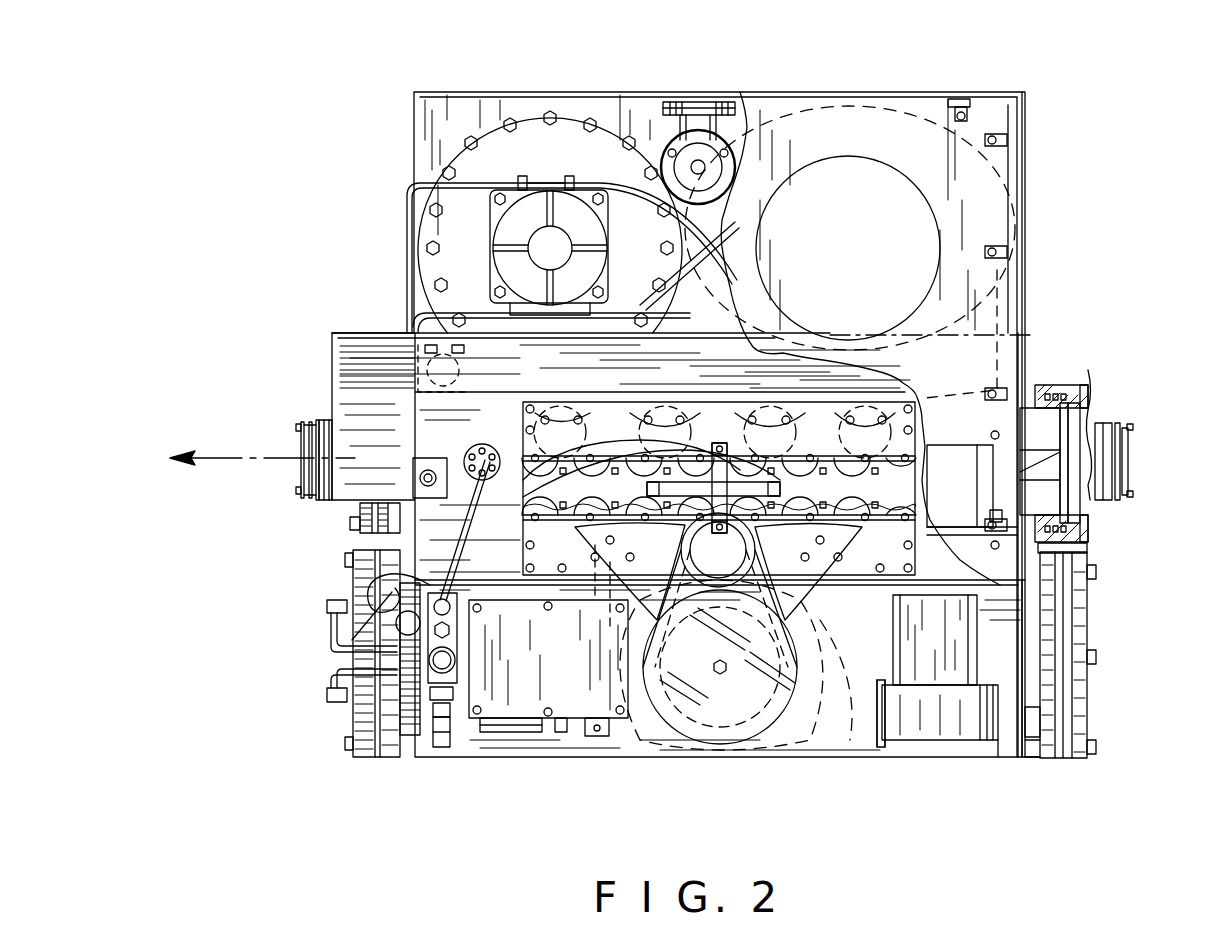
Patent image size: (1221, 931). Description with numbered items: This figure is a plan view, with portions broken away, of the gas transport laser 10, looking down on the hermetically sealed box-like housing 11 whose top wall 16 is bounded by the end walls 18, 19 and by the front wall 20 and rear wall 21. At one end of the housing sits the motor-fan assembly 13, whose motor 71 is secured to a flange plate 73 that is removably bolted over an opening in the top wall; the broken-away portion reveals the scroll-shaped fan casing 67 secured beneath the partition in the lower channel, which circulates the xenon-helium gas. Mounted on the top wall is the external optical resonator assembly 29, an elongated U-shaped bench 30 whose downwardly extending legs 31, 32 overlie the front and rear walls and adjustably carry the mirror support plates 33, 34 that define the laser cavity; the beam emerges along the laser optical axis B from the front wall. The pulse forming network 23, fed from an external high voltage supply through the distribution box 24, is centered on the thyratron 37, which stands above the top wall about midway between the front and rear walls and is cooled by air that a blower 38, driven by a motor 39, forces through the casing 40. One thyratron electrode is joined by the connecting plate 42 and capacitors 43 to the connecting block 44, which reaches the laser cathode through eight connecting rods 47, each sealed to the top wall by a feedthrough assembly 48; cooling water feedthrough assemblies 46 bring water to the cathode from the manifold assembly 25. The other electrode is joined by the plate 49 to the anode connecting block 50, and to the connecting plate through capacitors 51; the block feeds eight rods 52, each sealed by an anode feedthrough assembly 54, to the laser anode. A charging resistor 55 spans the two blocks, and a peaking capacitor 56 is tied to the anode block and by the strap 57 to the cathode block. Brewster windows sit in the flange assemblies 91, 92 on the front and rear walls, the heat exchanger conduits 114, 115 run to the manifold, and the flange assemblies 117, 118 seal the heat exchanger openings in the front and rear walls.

The gas transport laser 10 is at (1048, 152).
The housing 11 is at (1014, 766).
The motor-fan assembly 13 is at (488, 235).
The top wall 16 is at (1000, 758).
The end wall 18 is at (752, 92).
The end wall 19 is at (557, 758).
The front wall 20 is at (412, 758).
The rear wall 21 is at (1032, 758).
The pulse forming network 23 is at (862, 612).
The distribution box 24 is at (548, 668).
The manifold assembly 25 is at (441, 750).
The external optical resonator assembly 29 is at (324, 320).
The U-shaped bench 30 is at (681, 456).
The leg 31 is at (320, 418).
The leg 32 is at (1107, 423).
The mirror support plate 33 is at (303, 470).
The mirror support plate 34 is at (1128, 452).
The thyratron 37 is at (790, 650).
The blower 38 is at (952, 742).
The motor 39 is at (935, 640).
The casing 40 is at (764, 732).
The connecting plate 42 is at (715, 740).
The capacitors 43 is at (625, 410).
The connecting block 44 is at (528, 425).
The cooling water feedthrough assemblies 46 is at (470, 455).
The connecting rods 47 is at (524, 488).
The feedthrough assembly 48 is at (525, 452).
The plate 49 is at (825, 640).
The anode connecting block 50 is at (523, 556).
The capacitors 51 is at (615, 625).
The rods 52 is at (915, 465).
The anode feedthrough assembly 54 is at (523, 520).
The charging resistor 55 is at (713, 490).
The peaking capacitor 56 is at (690, 585).
The strap 57 is at (722, 442).
The fan casing 67 is at (800, 112).
The motor 71 is at (508, 190).
The flange plate 73 is at (562, 125).
The flange assembly 91 is at (353, 538).
The flange assembly 92 is at (1090, 546).
The conduit 114 is at (328, 632).
The conduit 115 is at (328, 675).
The flange assembly 117 is at (357, 766).
The flange assembly 118 is at (1085, 763).
The laser optical axis B is at (232, 457).